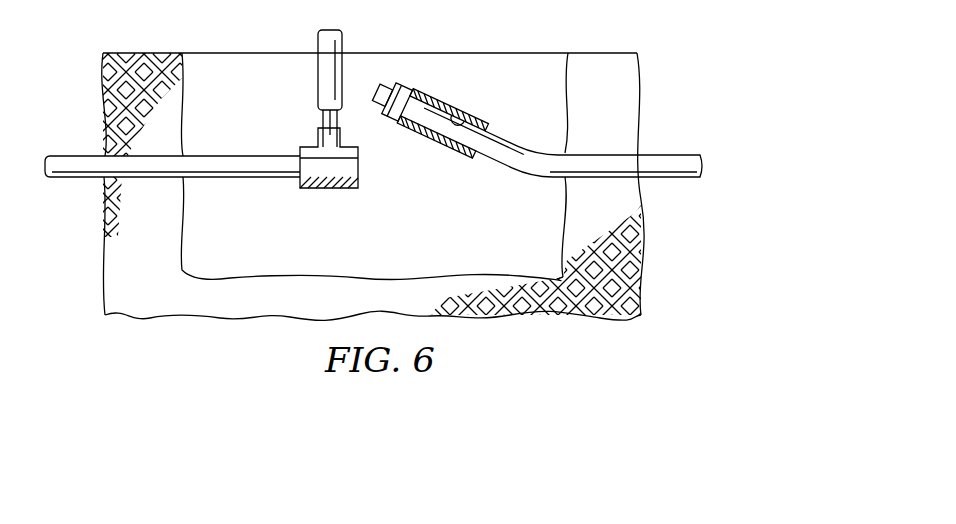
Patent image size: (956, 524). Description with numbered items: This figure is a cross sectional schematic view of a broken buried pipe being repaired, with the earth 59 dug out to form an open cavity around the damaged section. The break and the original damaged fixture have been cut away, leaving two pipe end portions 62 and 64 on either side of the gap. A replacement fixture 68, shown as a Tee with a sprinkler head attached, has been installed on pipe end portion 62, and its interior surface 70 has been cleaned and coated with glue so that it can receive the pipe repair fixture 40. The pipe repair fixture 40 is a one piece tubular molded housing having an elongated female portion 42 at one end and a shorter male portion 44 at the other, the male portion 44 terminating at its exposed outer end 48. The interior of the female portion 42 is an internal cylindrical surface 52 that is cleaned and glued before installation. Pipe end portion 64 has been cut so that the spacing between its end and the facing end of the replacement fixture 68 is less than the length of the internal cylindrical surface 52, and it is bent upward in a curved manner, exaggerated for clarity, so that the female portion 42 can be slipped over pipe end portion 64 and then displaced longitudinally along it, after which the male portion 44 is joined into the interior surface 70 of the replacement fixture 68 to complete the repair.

The pipe repair fixture 40 is at (429, 119).
The female portion 42 is at (455, 150).
The male portion 44 is at (399, 90).
The outer end 48 is at (385, 99).
The internal cylindrical surface 52 is at (470, 118).
The earth 59 is at (152, 287).
The pipe end portion 62 is at (253, 178).
The pipe end portion 64 is at (592, 153).
The replacement fixture 68 is at (320, 141).
The interior surface 70 is at (356, 170).